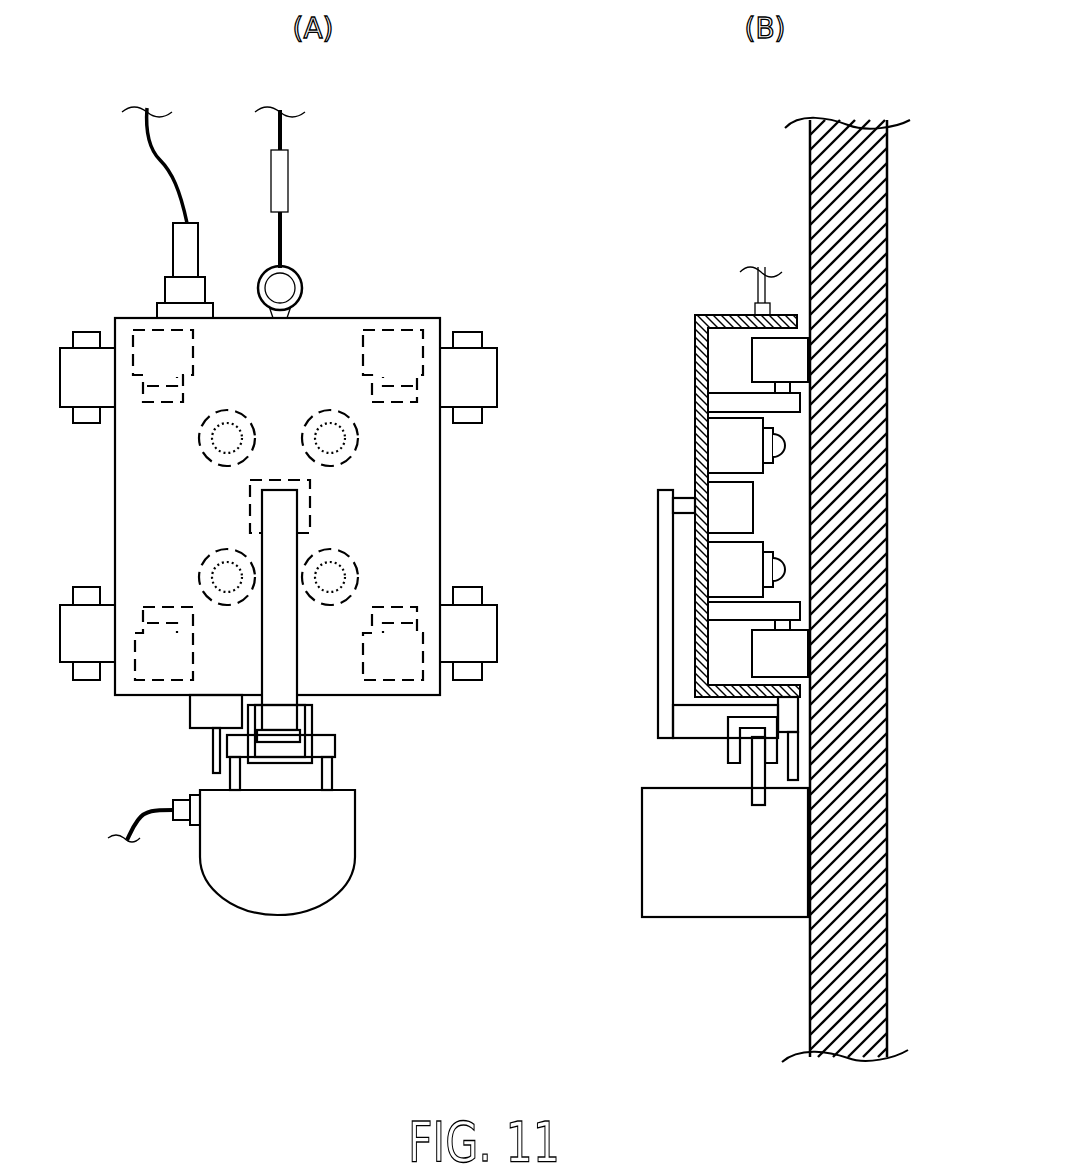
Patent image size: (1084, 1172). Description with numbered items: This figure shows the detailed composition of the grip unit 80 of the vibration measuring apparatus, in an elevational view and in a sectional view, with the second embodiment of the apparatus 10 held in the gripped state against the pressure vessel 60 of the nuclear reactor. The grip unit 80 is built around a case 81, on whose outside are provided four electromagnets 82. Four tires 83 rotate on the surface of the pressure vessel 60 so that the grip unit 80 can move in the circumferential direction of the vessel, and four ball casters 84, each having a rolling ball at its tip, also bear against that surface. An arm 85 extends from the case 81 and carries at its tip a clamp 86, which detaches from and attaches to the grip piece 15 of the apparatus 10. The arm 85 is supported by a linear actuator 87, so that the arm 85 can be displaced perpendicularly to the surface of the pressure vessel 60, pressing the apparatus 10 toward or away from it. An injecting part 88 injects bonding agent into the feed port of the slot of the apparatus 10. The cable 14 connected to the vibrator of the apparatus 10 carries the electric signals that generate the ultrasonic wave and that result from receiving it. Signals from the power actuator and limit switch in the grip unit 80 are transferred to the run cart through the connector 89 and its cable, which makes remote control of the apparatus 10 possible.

The vibration measuring apparatus 10 is at (355, 852).
The cable 14 is at (125, 825).
The grip piece 15 is at (340, 745).
The pressure vessel 60 is at (820, 942).
The grip unit 80 is at (400, 208).
The case 81 is at (440, 508).
The electromagnet 82 is at (497, 378).
The tire 83 is at (392, 322).
The ball caster 84 is at (330, 410).
The arm 85 is at (297, 650).
The clamp 86 is at (278, 765).
The linear actuator 87 is at (312, 508).
The injecting part 88 is at (190, 712).
The connector 89 is at (173, 250).